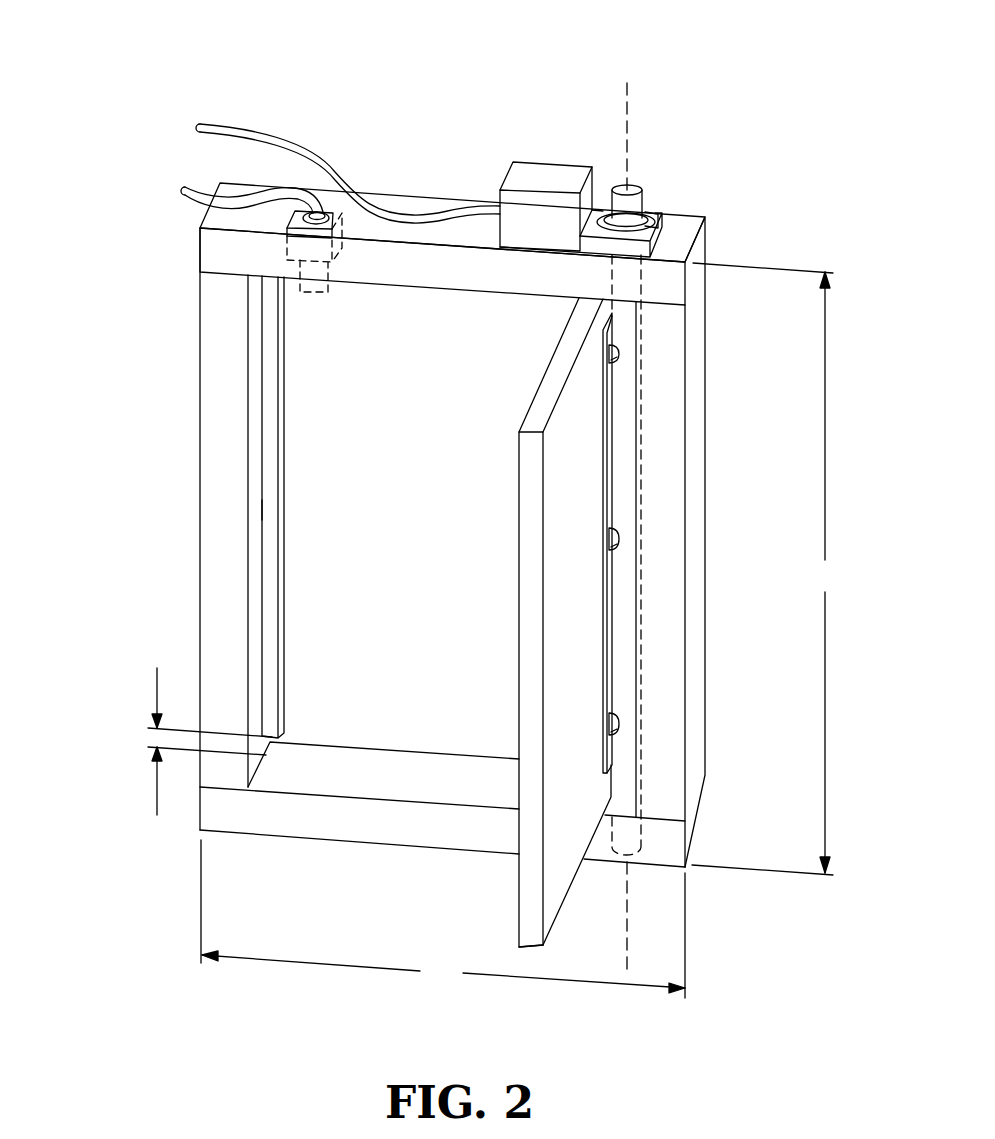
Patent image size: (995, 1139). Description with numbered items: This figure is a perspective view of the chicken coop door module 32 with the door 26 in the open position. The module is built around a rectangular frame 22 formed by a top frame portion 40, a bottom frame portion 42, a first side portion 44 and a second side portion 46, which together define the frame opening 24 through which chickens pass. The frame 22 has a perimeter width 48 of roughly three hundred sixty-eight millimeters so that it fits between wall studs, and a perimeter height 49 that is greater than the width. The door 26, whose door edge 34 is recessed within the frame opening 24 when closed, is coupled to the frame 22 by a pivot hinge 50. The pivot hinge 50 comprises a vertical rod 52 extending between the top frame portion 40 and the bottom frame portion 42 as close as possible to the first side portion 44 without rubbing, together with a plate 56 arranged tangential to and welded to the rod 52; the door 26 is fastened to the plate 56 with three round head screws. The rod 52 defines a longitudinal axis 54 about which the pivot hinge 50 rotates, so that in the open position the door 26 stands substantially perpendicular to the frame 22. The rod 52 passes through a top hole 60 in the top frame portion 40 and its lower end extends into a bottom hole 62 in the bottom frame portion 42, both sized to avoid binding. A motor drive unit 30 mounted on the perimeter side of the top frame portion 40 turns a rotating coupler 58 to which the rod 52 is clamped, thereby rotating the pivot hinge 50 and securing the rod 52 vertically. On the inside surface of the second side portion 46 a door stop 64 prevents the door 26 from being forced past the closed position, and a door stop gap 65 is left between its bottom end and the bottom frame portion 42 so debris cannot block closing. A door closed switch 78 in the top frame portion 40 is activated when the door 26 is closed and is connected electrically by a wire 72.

The frame 22 is at (692, 479).
The frame opening 24 is at (327, 577).
The door 26 is at (570, 550).
The motor drive unit 30 is at (563, 165).
The chicken coop door module 32 is at (768, 137).
The door edge 34 is at (530, 850).
The top frame portion 40 is at (403, 267).
The bottom frame portion 42 is at (360, 828).
The first side portion 44 is at (692, 608).
The second side portion 46 is at (220, 425).
The perimeter width 48 is at (443, 919).
The perimeter height 49 is at (767, 569).
The pivot hinge 50 is at (620, 702).
The rod 52 is at (620, 382).
The longitudinal axis 54 is at (628, 102).
The plate 56 is at (612, 645).
The rotating coupler 58 is at (652, 203).
The top hole 60 is at (652, 232).
The bottom hole 62 is at (609, 805).
The door stop 64 is at (272, 490).
The door stop gap 65 is at (150, 735).
The wire 72 is at (250, 128).
The door closed switch 78 is at (328, 210).